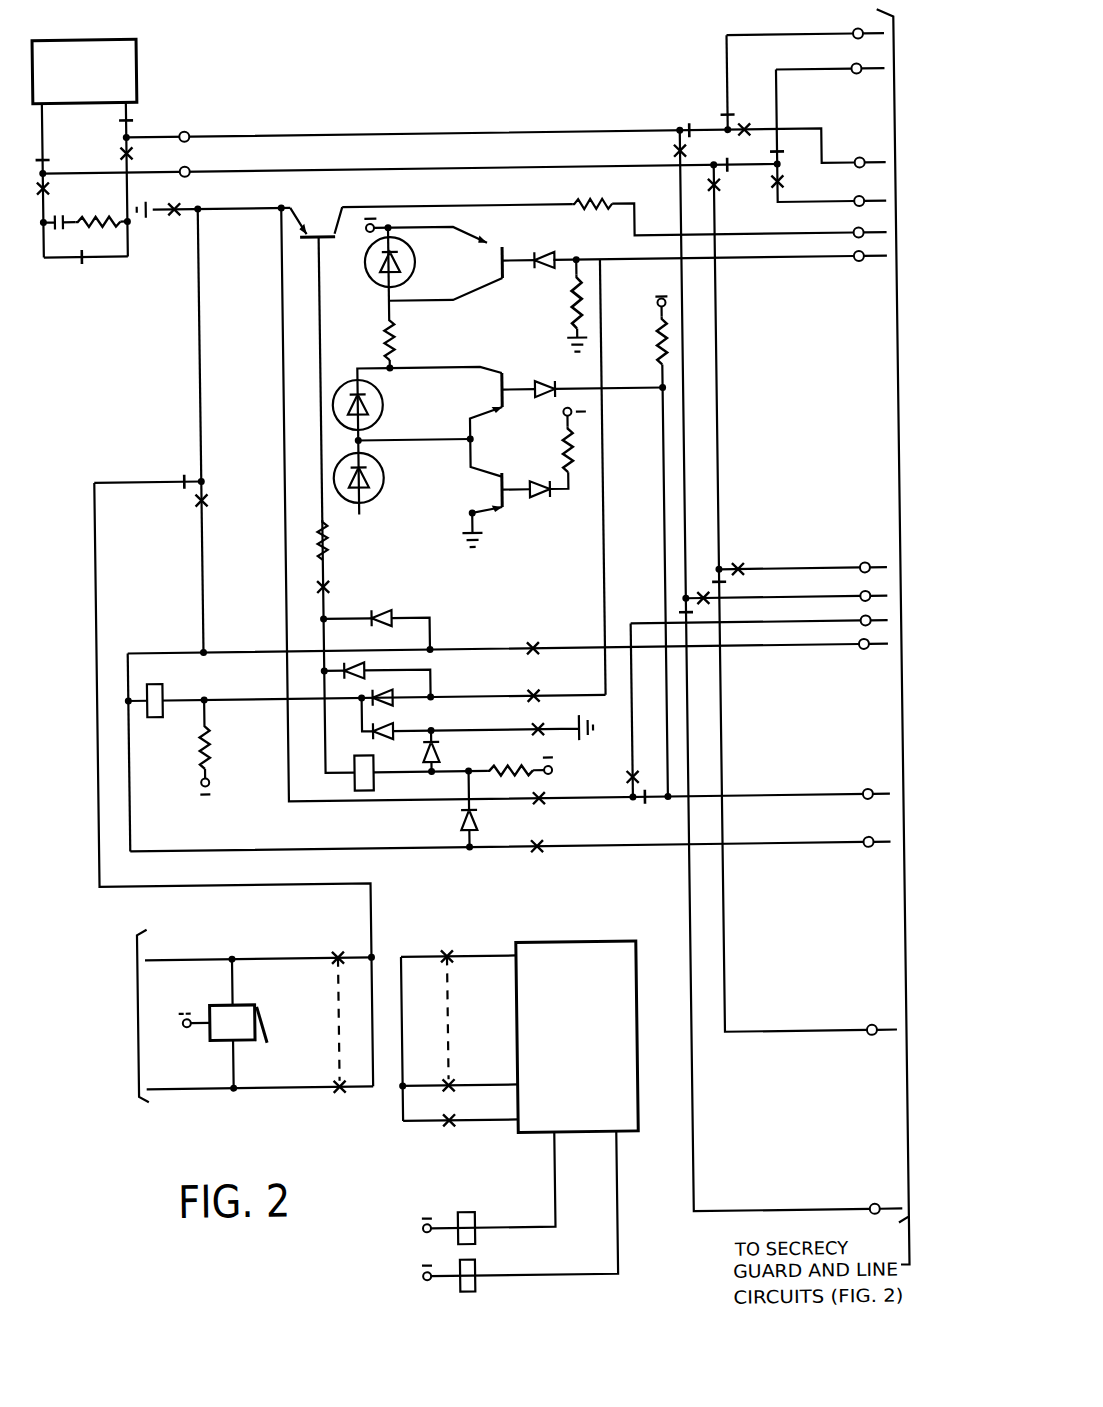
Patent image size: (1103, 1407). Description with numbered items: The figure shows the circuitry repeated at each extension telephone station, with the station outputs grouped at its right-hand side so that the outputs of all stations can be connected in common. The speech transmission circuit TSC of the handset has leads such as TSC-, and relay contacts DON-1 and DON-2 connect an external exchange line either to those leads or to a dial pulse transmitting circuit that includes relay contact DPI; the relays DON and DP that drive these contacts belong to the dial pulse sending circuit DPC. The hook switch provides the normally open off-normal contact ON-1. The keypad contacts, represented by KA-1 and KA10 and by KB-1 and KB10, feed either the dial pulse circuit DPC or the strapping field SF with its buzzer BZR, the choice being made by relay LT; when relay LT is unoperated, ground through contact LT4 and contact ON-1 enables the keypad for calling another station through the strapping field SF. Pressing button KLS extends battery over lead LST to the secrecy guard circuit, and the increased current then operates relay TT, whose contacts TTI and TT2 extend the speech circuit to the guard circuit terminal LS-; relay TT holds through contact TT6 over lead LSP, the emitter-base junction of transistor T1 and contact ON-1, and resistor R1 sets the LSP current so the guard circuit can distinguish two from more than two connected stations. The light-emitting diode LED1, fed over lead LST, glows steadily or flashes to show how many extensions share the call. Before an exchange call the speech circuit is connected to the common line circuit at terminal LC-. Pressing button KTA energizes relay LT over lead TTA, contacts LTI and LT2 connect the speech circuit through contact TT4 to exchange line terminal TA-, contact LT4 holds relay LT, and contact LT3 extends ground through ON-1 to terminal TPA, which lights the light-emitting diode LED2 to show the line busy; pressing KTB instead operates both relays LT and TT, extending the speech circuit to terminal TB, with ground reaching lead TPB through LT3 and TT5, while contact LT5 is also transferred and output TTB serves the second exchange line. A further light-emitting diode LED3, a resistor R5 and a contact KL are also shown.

The telephone speech transmission circuit TSC is at (144, 58).
The relay contact DON-2 is at (124, 132).
The relay contact DON-1 is at (58, 166).
The resistor R1 is at (98, 210).
The relay contact DPI is at (89, 258).
The off-normal hook switch contact ON-1 is at (182, 204).
The speech circuit lead TSC- is at (198, 153).
The transistor T1 is at (318, 223).
The light-emitting diode LED1 is at (408, 280).
The light-emitting diode LED2 is at (372, 418).
The light emitting diode 3 LED3 is at (378, 491).
The resistor R5 is at (400, 333).
The relay contact LT4 is at (198, 497).
The push button KTB is at (546, 633).
The relay LT is at (160, 680).
The button KLS is at (546, 682).
The relay contact TT6 is at (332, 583).
The KL key contact KL is at (532, 723).
The relay TT is at (345, 774).
The relay contact LT3 is at (545, 795).
The relay contact TT5 is at (636, 773).
The push button KTA is at (539, 840).
The relay contact LTI is at (694, 152).
The relay contact TTI is at (752, 120).
The output terminal LC- is at (856, 70).
The relay contact TT2 is at (790, 184).
The relay contact LT2 is at (727, 190).
The output terminal LS- is at (868, 201).
The output lead LSP is at (858, 234).
The output lead LST is at (857, 258).
The output terminal TB is at (860, 568).
The output terminal TTB is at (728, 583).
The relay contact TT4 is at (696, 614).
The output lead TPB is at (864, 623).
The output terminal TPA is at (858, 794).
The output lead TTA is at (866, 842).
The output terminal TA- is at (866, 1028).
The strapping field SF is at (109, 1016).
The keypad contact KB-1 is at (334, 949).
The keypad contact KB10 is at (342, 1070).
The buzzer BZR is at (230, 1000).
The dial pulse sending circuit DPC is at (577, 1037).
The keypad contact KA-1 is at (444, 948).
The keypad contact KA10 is at (436, 1082).
The relay contact LT5 is at (448, 1118).
The relay DON is at (460, 1212).
The relay DP is at (468, 1272).